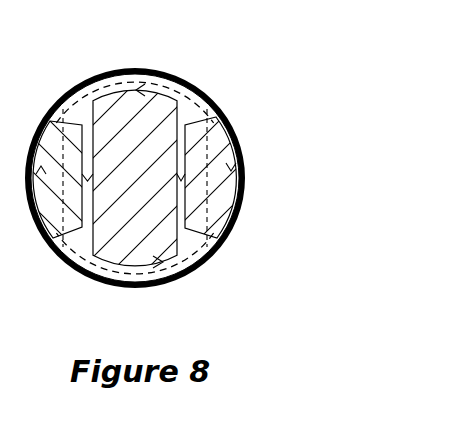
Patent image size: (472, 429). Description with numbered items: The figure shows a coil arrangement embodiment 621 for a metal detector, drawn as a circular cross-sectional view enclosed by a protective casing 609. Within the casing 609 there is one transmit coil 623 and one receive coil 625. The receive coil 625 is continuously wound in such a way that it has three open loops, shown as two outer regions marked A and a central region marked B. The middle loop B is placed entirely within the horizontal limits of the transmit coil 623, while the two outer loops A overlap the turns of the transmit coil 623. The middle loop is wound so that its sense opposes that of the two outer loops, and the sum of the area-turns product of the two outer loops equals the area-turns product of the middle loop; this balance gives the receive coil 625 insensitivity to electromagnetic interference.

The casing 609 is at (190, 82).
The coil arrangement embodiment 621 is at (290, 153).
The transmit coil 623 is at (203, 262).
The receive coil 625 is at (237, 142).